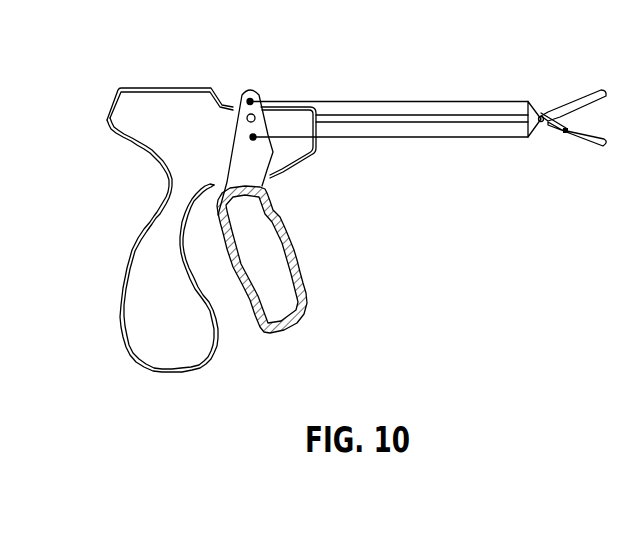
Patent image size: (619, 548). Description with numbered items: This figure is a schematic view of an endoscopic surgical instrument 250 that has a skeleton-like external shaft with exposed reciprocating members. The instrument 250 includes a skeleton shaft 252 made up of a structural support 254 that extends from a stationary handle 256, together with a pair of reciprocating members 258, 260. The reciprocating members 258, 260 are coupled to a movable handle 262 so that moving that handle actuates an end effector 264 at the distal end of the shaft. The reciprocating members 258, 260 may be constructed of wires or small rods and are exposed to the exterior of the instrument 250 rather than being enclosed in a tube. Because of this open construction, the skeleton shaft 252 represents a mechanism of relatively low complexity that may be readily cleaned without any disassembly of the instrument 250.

The instrument 250 is at (106, 64).
The skeleton shaft 252 is at (390, 56).
The structural support 254 is at (375, 117).
The stationary handle 256 is at (143, 255).
The reciprocating member 258 is at (460, 138).
The reciprocating member 260 is at (458, 100).
The movable handle 262 is at (305, 263).
The end effector 264 is at (579, 152).